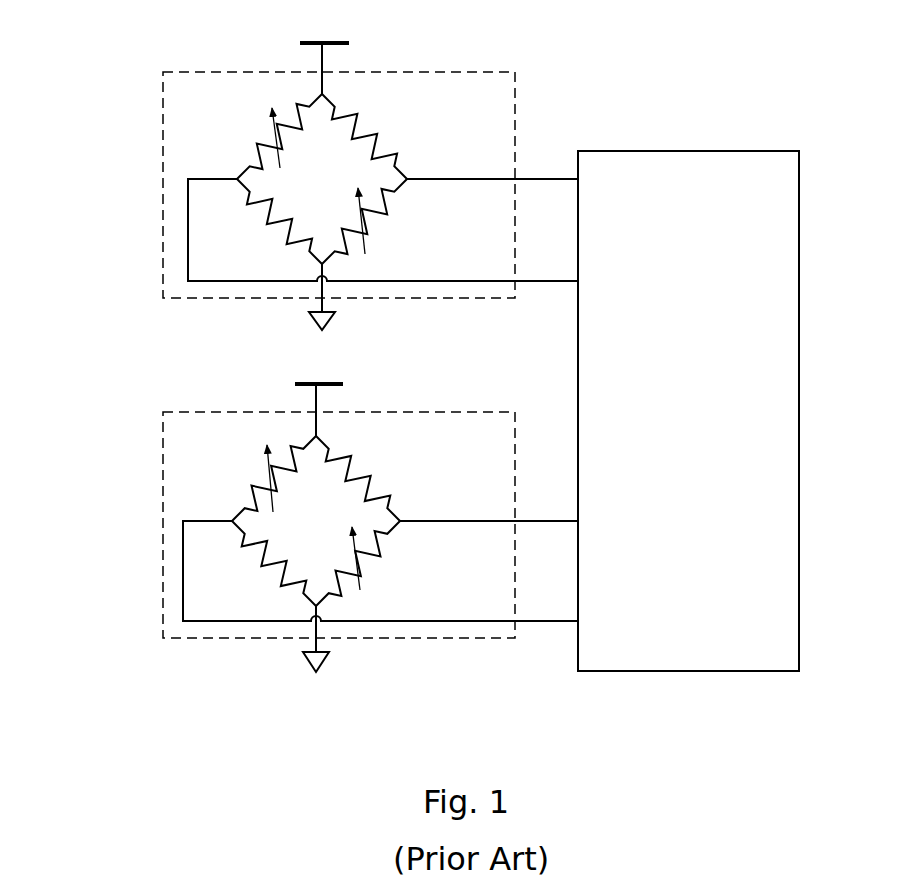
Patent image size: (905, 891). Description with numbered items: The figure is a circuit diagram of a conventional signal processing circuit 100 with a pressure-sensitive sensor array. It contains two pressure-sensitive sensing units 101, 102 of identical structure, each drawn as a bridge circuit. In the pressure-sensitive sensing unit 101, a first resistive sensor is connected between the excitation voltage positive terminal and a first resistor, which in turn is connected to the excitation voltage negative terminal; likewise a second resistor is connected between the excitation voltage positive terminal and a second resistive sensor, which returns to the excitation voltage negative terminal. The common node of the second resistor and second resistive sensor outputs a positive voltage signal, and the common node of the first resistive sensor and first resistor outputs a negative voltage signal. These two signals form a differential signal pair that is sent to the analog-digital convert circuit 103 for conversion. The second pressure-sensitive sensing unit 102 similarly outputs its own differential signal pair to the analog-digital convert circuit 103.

The signal processing circuit 100 is at (97, 92).
The pressure-sensitive sensing unit 101 is at (432, 73).
The pressure-sensitive sensing unit 102 is at (450, 412).
The analog-digital convert circuit 103 is at (673, 151).